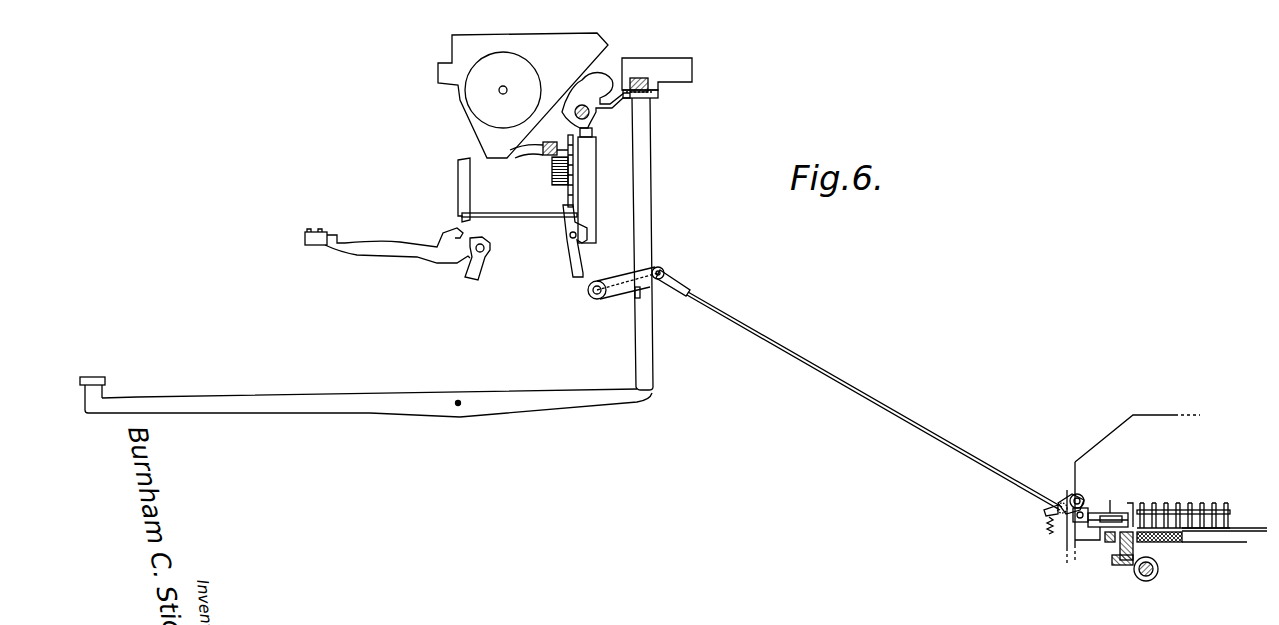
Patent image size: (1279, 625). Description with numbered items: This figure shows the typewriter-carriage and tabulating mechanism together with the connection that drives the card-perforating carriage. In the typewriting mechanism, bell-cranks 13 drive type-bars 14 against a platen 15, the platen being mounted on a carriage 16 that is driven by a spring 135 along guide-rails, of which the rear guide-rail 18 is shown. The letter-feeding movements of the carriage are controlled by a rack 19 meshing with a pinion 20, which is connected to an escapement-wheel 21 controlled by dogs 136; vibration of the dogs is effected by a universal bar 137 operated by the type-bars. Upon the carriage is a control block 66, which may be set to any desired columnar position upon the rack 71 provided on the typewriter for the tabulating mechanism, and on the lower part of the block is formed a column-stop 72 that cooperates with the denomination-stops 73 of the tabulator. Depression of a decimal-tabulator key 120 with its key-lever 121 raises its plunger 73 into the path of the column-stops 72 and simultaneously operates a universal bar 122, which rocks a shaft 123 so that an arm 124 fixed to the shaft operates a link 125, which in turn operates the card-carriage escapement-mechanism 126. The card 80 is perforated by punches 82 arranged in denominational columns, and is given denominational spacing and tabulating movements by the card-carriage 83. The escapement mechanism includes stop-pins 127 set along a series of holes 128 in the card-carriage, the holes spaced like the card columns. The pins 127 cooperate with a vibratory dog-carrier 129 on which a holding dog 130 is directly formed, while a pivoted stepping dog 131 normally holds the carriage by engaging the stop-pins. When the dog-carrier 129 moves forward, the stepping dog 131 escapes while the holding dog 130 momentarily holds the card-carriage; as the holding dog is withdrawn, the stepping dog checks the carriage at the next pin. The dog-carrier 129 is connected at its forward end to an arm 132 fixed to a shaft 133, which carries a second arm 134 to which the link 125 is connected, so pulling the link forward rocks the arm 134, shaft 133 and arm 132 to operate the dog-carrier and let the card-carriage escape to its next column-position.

The bell-crank 13 is at (482, 270).
The type-bar 14 is at (385, 242).
The platen 15 is at (503, 90).
The carriage 16 is at (459, 128).
The rear guide-rail 18 is at (581, 106).
The rack 19 is at (548, 155).
The pinion 20 is at (552, 178).
The escapement-wheel 21 is at (568, 192).
The control block 66 is at (657, 74).
The rack 71 is at (639, 77).
The column-stop 72 is at (658, 97).
The denomination-stop 73 is at (650, 122).
The card 80 is at (1255, 528).
The punch 82 is at (1186, 503).
The card-carriage 83 is at (1134, 569).
The decimal-tabulator key 120 is at (98, 373).
The key-lever 121 is at (370, 403).
The universal bar 122 is at (635, 292).
The shaft 123 is at (590, 295).
The arm 124 is at (628, 276).
The link 125 is at (766, 328).
The card-carriage escapement-mechanism 126 is at (1110, 500).
The stop-pin 127 is at (1115, 511).
The hole 128 is at (1110, 542).
The dog-carrier 129 is at (1108, 511).
The holding dog 130 is at (1130, 503).
The stepping dog 131 is at (1092, 526).
The arm 132 is at (1089, 492).
The shaft 133 is at (1072, 494).
The arm 134 is at (1043, 513).
The spring 135 is at (596, 172).
The dog 136 is at (572, 233).
The universal bar 137 is at (458, 179).